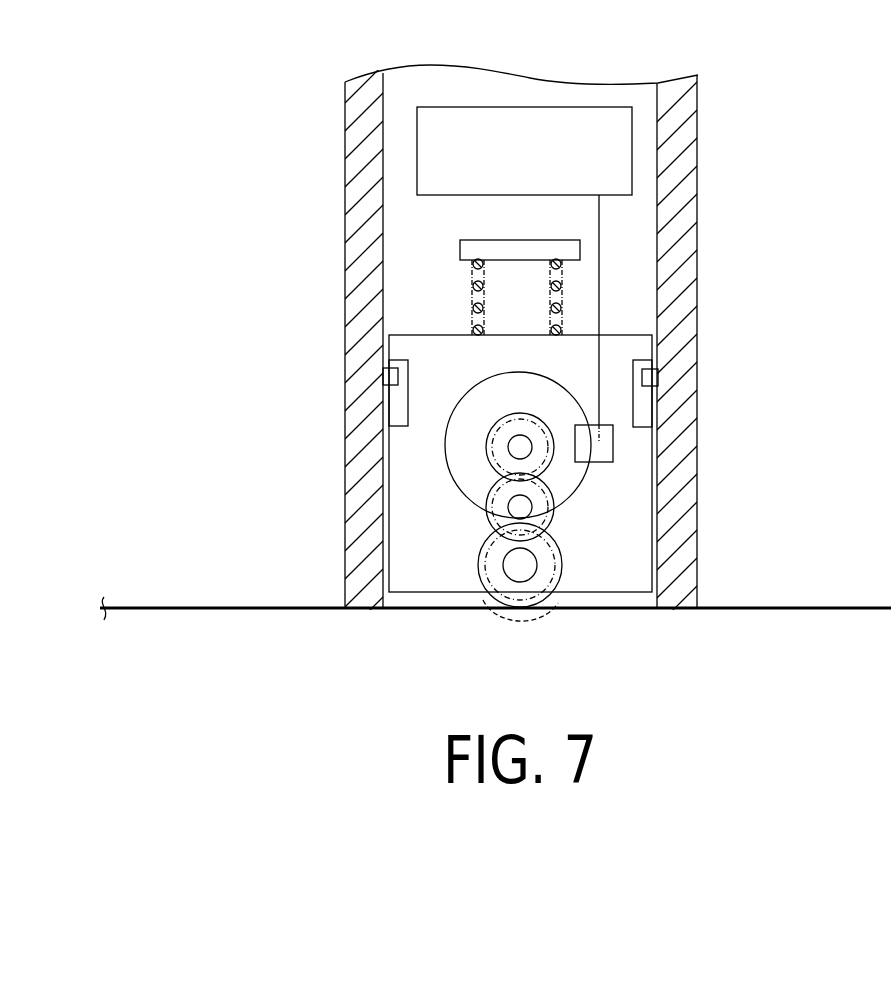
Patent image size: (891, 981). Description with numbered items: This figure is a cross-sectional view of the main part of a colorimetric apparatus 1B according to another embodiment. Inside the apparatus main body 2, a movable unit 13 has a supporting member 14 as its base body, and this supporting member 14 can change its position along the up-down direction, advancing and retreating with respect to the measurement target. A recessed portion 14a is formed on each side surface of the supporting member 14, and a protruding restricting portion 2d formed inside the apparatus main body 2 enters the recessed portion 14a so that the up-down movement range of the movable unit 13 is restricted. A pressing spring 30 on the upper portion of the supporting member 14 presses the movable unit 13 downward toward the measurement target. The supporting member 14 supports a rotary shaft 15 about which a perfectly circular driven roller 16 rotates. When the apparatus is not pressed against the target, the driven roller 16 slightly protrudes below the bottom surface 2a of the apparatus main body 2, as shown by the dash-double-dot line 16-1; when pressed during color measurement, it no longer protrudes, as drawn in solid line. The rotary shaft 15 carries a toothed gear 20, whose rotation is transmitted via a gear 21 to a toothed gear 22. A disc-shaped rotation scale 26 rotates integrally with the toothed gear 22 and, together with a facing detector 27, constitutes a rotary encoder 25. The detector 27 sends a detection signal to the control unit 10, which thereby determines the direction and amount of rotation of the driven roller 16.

The colorimetric apparatus 1B is at (293, 112).
The apparatus main body 2 is at (697, 230).
The bottom surface 2a is at (363, 608).
The restricting portion 2d is at (385, 376).
The control unit 10 is at (617, 145).
The movable unit 13 is at (536, 417).
The supporting member 14 is at (623, 334).
The recessed portion 14a is at (395, 400).
The rotary shaft 15 is at (527, 565).
The driven roller 16 is at (562, 553).
The driven roller in protruding state 16-1 is at (527, 622).
The toothed gear 20 is at (524, 590).
The gear 21 is at (486, 507).
The toothed gear 22 is at (486, 447).
The rotary encoder 25 is at (623, 356).
The rotation scale 26 is at (590, 492).
The detector 27 is at (613, 440).
The pressing spring 30 is at (465, 285).